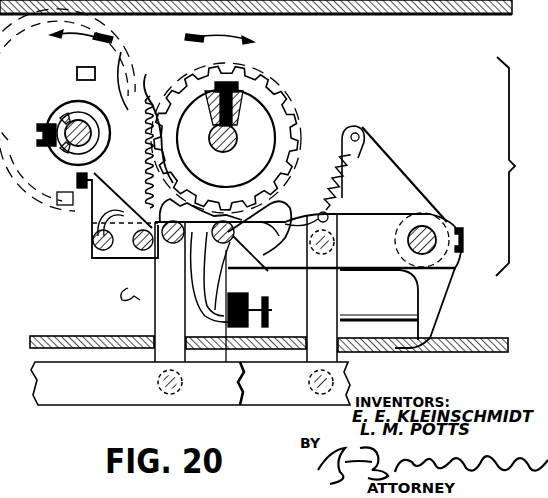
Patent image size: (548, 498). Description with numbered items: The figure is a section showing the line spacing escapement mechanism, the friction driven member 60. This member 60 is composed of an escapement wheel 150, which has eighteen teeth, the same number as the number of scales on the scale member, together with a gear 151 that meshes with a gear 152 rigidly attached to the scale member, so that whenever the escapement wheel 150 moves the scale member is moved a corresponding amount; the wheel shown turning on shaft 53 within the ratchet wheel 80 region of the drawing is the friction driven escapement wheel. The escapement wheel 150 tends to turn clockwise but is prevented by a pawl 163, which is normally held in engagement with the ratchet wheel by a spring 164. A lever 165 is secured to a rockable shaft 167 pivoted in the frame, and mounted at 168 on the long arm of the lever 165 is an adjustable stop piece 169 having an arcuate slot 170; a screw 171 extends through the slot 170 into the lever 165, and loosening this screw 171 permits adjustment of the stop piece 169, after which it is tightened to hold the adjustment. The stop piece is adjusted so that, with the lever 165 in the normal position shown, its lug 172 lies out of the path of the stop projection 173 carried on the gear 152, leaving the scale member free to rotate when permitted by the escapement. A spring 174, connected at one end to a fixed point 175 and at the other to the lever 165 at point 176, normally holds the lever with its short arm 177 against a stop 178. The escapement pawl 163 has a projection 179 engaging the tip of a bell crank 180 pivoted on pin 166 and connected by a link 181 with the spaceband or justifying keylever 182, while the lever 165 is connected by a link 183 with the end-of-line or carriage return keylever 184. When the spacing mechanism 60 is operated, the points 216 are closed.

The shaft 53 is at (232, 137).
The friction driven member 60 is at (518, 166).
The ratchet wheel 80 is at (74, 128).
The escapement wheel 150 is at (280, 98).
The gear 151 is at (159, 122).
The gear 152 is at (135, 77).
The pawl 163 is at (272, 234).
The spring 164 is at (147, 300).
The lever 165 is at (370, 225).
The pin 166 is at (256, 264).
The rockable shaft 167 is at (428, 234).
The mounting point 168 is at (140, 261).
The adjustable stop piece 169 is at (97, 210).
The arcuate slot 170 is at (105, 224).
The screw 171 is at (92, 252).
The lug 172 is at (114, 193).
The stop projection 173 is at (60, 204).
The spring 174 is at (347, 162).
The fixed point 175 is at (360, 128).
The connection point 176 is at (325, 212).
The short arm 177 is at (432, 294).
The stop 178 is at (402, 334).
The projection 179 is at (227, 366).
The bell crank 180 is at (224, 282).
The link 181 is at (162, 354).
The keylever 182 is at (45, 372).
The link 183 is at (322, 299).
The keylever 184 is at (278, 392).
The points 216 is at (255, 307).